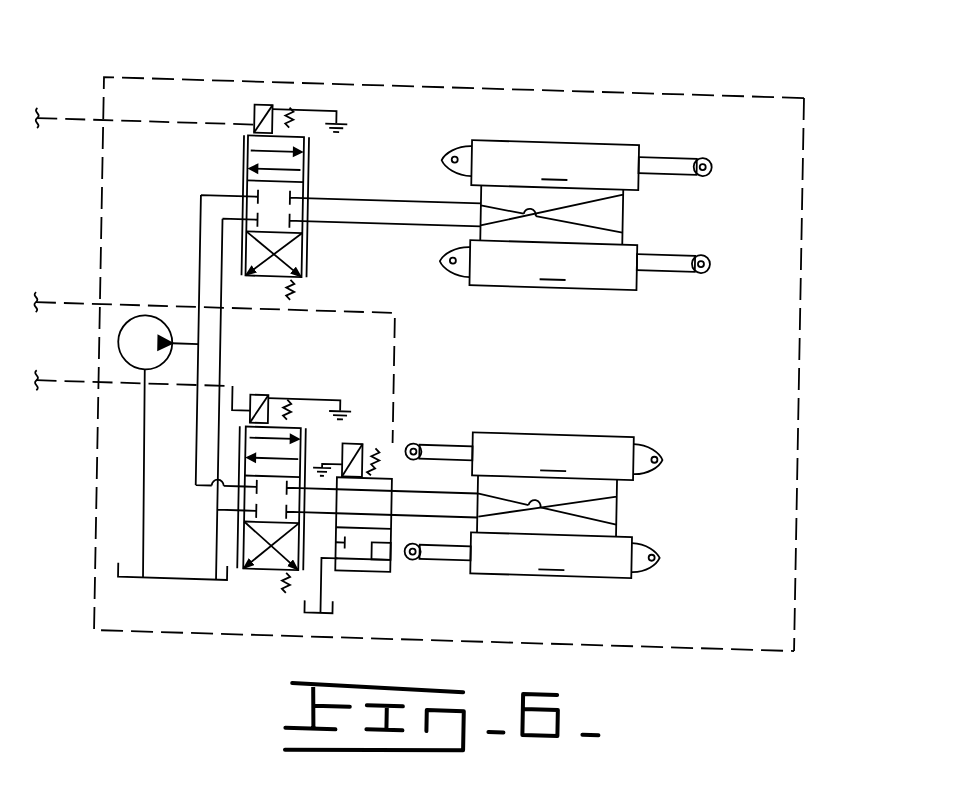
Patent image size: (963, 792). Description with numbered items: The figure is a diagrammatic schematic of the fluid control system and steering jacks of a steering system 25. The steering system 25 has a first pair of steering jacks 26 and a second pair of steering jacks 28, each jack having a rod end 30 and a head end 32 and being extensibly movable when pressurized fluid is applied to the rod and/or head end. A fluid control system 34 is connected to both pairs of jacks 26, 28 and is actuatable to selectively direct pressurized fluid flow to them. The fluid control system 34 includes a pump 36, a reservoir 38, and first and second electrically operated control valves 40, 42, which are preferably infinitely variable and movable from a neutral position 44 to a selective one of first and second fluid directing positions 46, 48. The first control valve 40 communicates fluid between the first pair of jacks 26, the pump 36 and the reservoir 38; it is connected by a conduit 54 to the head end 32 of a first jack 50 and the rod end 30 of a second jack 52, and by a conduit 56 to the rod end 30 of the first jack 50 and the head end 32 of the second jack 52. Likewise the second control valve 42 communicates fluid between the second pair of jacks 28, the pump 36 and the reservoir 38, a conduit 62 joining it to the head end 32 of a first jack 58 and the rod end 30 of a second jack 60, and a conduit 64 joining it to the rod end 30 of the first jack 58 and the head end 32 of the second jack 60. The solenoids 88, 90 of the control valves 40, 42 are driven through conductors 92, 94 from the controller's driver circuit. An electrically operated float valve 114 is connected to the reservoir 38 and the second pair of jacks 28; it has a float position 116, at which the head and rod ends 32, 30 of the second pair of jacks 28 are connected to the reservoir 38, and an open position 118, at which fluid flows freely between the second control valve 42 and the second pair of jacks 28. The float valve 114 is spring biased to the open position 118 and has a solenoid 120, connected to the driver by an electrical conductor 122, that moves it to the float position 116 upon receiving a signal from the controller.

The steering system 25 is at (830, 68).
The first pair of steering jacks 26 is at (554, 172).
The second pair of steering jacks 28 is at (552, 468).
The rod end 30 is at (621, 134).
The head end 32 is at (484, 134).
The fluid control system 34 is at (810, 372).
The pump 36 is at (123, 341).
The reservoir 38 is at (162, 576).
The first electrically operated control valve 40 is at (242, 163).
The second electrically operated control valve 42 is at (267, 573).
The neutral position 44 is at (305, 185).
The first fluid directing position 46 is at (303, 254).
The second fluid directing position 48 is at (301, 152).
The first jack of the first pair of jacks 50 is at (555, 165).
The second jack of the first pair of jacks 52 is at (553, 265).
The conduit 54 is at (452, 193).
The conduit 56 is at (415, 217).
The first jack of the second pair of jacks 58 is at (553, 456).
The second jack of the second pair of jacks 60 is at (551, 555).
The conduit 62 is at (617, 488).
The conduit 64 is at (606, 500).
The solenoid 88 is at (259, 115).
The solenoid 90 is at (269, 390).
The conductor 92 is at (79, 122).
The conductor 94 is at (84, 383).
The electrically operated float valve 114 is at (371, 567).
The float position 116 is at (387, 566).
The open position 118 is at (390, 478).
The solenoid 120 is at (363, 435).
The electrical conductor 122 is at (89, 303).